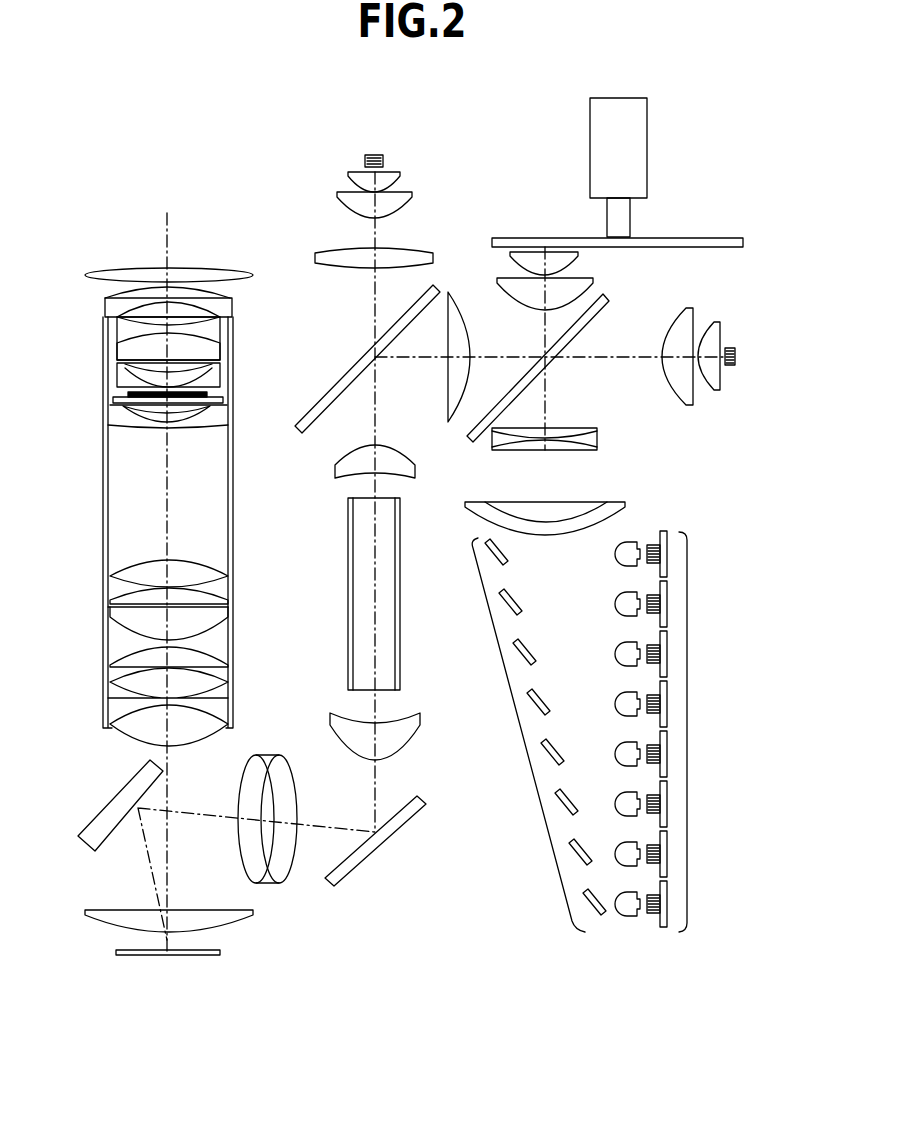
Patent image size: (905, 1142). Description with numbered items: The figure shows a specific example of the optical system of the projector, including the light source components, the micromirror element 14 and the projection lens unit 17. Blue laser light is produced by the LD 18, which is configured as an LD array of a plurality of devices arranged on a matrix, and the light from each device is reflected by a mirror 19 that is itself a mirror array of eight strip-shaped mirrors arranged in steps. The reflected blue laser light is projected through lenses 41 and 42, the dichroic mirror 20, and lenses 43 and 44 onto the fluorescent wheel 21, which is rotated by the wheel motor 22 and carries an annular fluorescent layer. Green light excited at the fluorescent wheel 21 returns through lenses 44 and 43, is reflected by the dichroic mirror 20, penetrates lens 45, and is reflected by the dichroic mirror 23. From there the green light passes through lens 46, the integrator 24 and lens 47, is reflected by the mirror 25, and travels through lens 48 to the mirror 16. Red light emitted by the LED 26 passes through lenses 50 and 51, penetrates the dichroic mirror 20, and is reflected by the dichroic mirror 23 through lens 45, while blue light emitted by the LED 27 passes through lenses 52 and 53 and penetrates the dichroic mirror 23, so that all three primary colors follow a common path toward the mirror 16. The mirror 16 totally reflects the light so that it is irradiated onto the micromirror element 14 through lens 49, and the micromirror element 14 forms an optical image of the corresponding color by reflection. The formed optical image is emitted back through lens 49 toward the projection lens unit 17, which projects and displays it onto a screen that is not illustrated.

The micromirror element 14 is at (220, 952).
The mirror 16 is at (93, 810).
The projection lens unit 17 is at (86, 281).
The LD 18 is at (689, 728).
The mirror 19 is at (523, 741).
The dichroic mirror 20 is at (600, 318).
The fluorescent wheel 21 is at (708, 235).
The wheel motor 22 is at (647, 140).
The dichroic mirror 23 is at (312, 407).
The integrator 24 is at (400, 518).
The mirror 25 is at (410, 823).
The LED 26 is at (737, 357).
The LED 27 is at (383, 160).
The lens 41 is at (612, 502).
The lens 42 is at (597, 435).
The lens 43 is at (593, 280).
The lens 44 is at (510, 268).
The lens 45 is at (470, 322).
The lens 46 is at (398, 447).
The lens 47 is at (420, 718).
The lens 48 is at (297, 783).
The lens 49 is at (253, 912).
The lens 50 is at (717, 320).
The lens 51 is at (687, 308).
The lens 52 is at (412, 195).
The lens 53 is at (422, 250).